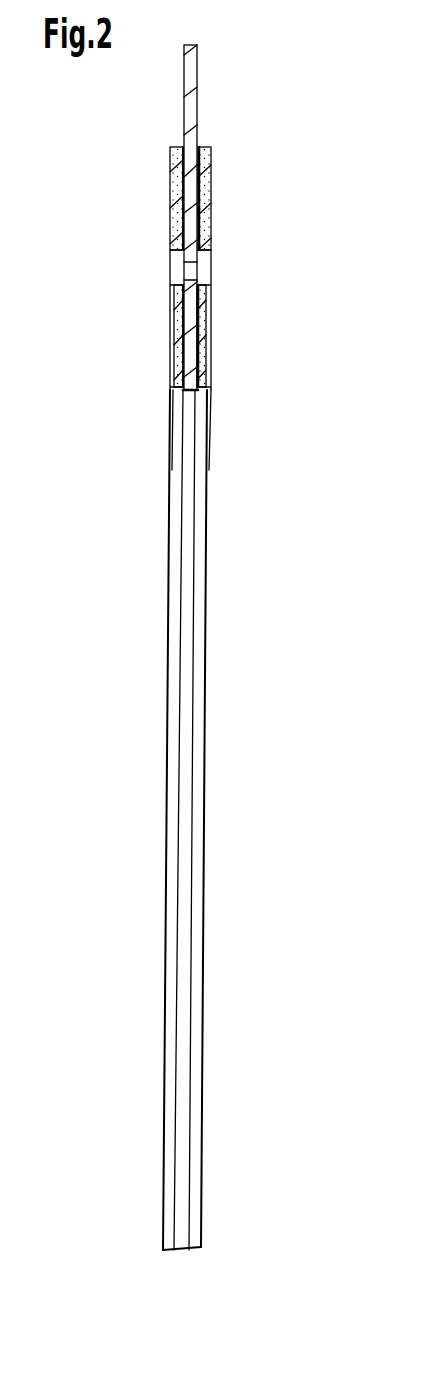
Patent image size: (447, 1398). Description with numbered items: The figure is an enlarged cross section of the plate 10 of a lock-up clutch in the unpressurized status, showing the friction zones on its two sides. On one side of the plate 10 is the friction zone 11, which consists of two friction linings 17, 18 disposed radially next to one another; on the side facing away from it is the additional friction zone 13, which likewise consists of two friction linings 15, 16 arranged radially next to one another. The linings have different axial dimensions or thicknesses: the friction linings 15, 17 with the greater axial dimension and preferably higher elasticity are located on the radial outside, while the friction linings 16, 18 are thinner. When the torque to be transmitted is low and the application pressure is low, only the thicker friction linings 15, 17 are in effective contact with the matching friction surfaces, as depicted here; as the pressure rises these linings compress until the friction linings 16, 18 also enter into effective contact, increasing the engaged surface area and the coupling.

The plate 10 is at (193, 117).
The friction zone 11 is at (229, 246).
The friction zone 13 is at (146, 247).
The friction lining 15 is at (173, 215).
The friction lining 16 is at (178, 338).
The friction lining 17 is at (208, 203).
The friction lining 18 is at (203, 348).